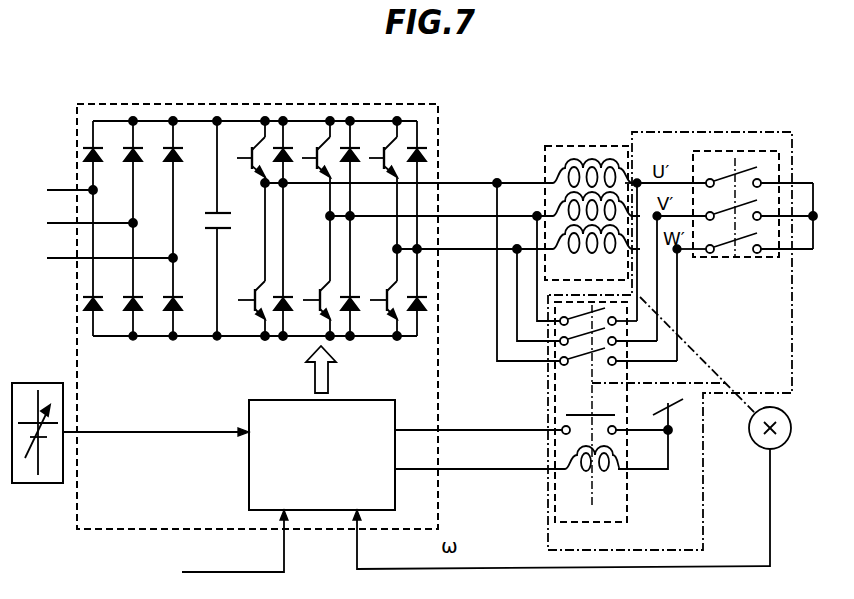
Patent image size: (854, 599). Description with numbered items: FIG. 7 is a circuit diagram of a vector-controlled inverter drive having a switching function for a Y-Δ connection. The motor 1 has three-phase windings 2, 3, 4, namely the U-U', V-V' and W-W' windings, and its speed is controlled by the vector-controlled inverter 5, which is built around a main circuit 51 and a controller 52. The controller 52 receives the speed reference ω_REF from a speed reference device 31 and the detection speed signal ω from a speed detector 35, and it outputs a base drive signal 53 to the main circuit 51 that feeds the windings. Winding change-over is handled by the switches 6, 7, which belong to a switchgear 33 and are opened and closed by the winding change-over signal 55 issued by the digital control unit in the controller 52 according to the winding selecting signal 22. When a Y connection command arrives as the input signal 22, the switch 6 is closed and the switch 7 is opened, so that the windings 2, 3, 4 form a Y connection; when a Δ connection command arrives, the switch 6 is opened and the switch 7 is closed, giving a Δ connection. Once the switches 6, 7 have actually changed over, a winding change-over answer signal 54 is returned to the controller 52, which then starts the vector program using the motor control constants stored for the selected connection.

The motor 1 is at (557, 146).
The U-U' winding 2 is at (577, 165).
The V-V' winding 3 is at (608, 203).
The W-W' winding 4 is at (565, 246).
The inverter 5 is at (308, 103).
The switch 6 is at (727, 150).
The switch 7 is at (630, 497).
The winding selecting signal 22 is at (151, 541).
The speed reference device 31 is at (46, 382).
The switchgear 33 is at (706, 509).
The speed detector 35 is at (790, 416).
The main circuit 51 is at (195, 338).
The controller 52 is at (248, 479).
The base drive signal 53 is at (314, 373).
The winding change-over answer signal 54 is at (511, 429).
The winding change-over signal 55 is at (508, 471).